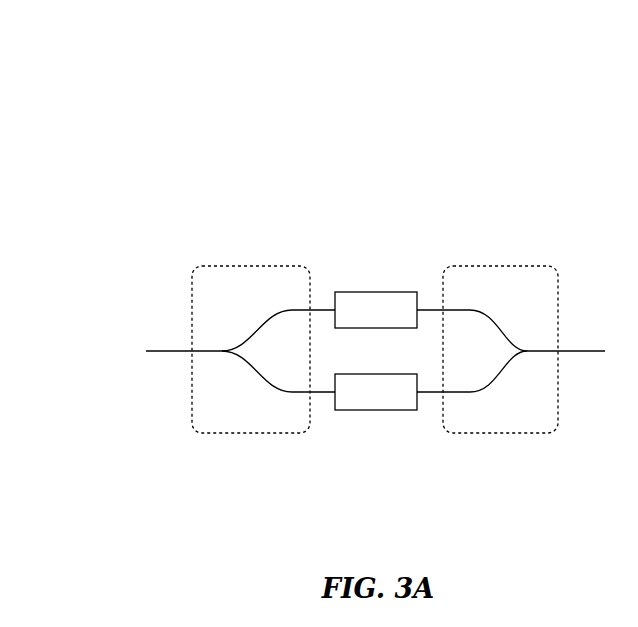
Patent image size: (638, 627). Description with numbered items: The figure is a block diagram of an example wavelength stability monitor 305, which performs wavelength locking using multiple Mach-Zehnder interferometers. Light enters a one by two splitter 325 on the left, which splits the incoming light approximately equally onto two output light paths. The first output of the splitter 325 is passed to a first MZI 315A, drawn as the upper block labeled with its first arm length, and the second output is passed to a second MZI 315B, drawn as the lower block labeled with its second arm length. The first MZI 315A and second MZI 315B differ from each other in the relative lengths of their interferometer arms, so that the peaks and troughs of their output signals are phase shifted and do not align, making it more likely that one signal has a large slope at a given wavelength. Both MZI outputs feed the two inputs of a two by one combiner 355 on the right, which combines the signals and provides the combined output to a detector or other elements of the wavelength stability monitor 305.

The wavelength stability monitor 305 is at (99, 168).
The one by two splitter 325 is at (208, 265).
The first MZI 315A is at (357, 292).
The second MZI 315B is at (383, 410).
The two by one combiner 355 is at (465, 266).